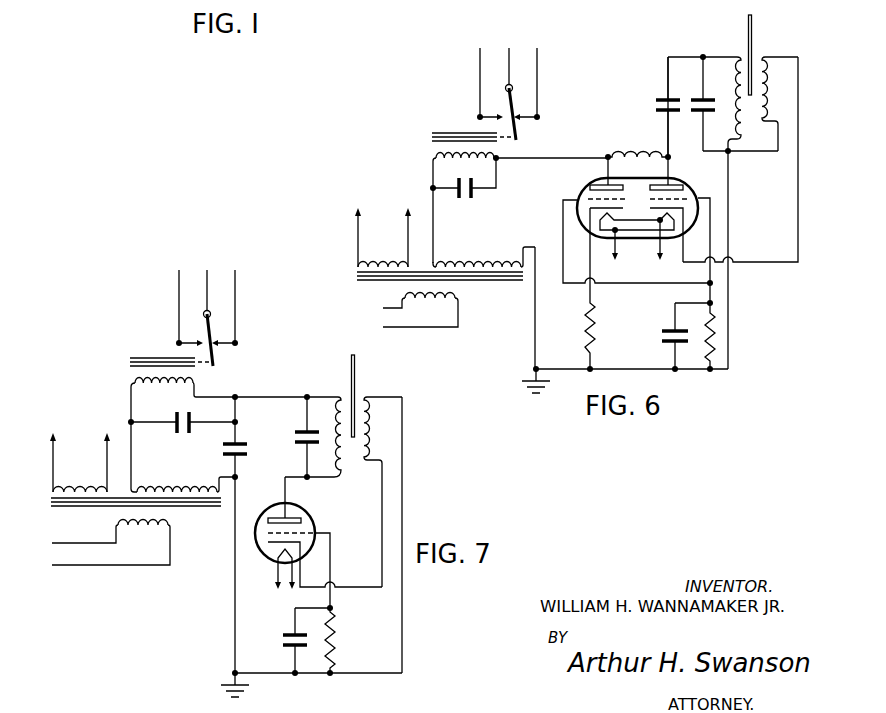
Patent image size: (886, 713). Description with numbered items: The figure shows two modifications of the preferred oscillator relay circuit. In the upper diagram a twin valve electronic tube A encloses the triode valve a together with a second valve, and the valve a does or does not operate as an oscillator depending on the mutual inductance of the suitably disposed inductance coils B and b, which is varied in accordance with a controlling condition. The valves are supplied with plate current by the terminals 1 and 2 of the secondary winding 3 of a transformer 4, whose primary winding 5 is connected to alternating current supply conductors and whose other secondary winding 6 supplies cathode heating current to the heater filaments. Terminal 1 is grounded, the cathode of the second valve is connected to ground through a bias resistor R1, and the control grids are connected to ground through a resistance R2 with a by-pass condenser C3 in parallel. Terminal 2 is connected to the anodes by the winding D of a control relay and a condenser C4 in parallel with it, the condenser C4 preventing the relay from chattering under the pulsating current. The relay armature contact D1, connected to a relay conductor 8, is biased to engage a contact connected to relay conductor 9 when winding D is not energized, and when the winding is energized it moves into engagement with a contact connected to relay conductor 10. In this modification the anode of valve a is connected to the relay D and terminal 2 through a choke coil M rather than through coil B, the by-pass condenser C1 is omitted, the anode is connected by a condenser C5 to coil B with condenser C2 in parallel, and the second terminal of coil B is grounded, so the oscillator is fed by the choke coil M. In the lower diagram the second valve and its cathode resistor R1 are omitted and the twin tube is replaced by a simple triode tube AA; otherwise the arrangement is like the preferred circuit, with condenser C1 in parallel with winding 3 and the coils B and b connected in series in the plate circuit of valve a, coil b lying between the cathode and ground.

In FIG. 6, the transformer terminal 1 is at (535, 312).
In FIG. 6, the transformer terminal 2 is at (434, 237).
In FIG. 6, the secondary winding 3 is at (480, 262).
In FIG. 7, the secondary winding 3 is at (160, 484).
In FIG. 6, the transformer 4 is at (372, 283).
In FIG. 7, the transformer 4 is at (90, 508).
In FIG. 6, the primary winding 5 is at (428, 299).
In FIG. 7, the primary winding 5 is at (133, 526).
In FIG. 6, the secondary winding 6 is at (388, 260).
In FIG. 7, the secondary winding 6 is at (84, 485).
In FIG. 6, the relay conductor 8 is at (509, 48).
In FIG. 6, the relay conductor 9 is at (537, 48).
In FIG. 6, the relay conductor 10 is at (480, 48).
In FIG. 6, the control relay winding D is at (434, 148).
In FIG. 7, the control relay winding D is at (131, 375).
In FIG. 6, the relay armature contact D1 is at (516, 104).
In FIG. 7, the relay armature contact D1 is at (212, 326).
In FIG. 7, the by-pass condenser C1 is at (249, 450).
In FIG. 6, the condenser C2 is at (703, 99).
In FIG. 7, the condenser C2 is at (300, 430).
In FIG. 6, the by-pass condenser C3 is at (676, 330).
In FIG. 7, the by-pass condenser C3 is at (292, 642).
In FIG. 6, the condenser C4 is at (460, 199).
In FIG. 7, the condenser C4 is at (178, 434).
In FIG. 6, the condenser C5 is at (658, 99).
In FIG. 6, the bias resistor R1 is at (595, 330).
In FIG. 6, the resistance R2 is at (713, 331).
In FIG. 7, the resistance R2 is at (336, 650).
In FIG. 6, the choke coil M is at (638, 147).
In FIG. 6, the twin valve electronic tube A is at (656, 180).
In FIG. 7, the simple triode tube AA is at (306, 513).
In FIG. 6, the triode valve a is at (590, 196).
In FIG. 7, the triode valve a is at (268, 528).
In FIG. 6, the inductance coil B is at (737, 72).
In FIG. 7, the inductance coil B is at (339, 405).
In FIG. 6, the inductance coil b is at (768, 84).
In FIG. 7, the inductance coil b is at (371, 423).
In FIG. 6, the core H is at (752, 46).
In FIG. 7, the core H is at (354, 370).